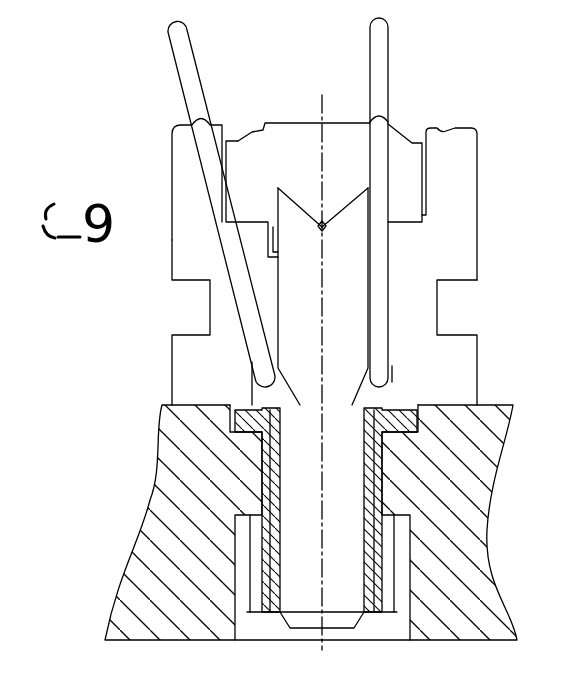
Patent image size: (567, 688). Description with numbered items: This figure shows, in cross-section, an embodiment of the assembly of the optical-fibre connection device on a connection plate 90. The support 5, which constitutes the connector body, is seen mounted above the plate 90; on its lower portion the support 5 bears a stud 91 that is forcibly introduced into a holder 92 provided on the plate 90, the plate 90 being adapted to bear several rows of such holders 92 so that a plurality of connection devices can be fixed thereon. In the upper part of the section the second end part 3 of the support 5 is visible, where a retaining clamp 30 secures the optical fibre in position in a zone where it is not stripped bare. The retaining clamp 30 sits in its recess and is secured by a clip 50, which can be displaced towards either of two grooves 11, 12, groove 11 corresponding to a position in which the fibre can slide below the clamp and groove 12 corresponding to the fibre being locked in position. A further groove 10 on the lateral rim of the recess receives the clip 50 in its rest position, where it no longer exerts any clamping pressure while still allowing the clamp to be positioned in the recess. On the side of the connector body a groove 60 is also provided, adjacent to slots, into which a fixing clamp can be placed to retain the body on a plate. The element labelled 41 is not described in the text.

The second end part 3 is at (171, 183).
The support 5 is at (172, 352).
The groove 10 is at (443, 131).
The groove 11 is at (240, 130).
The groove 12 is at (262, 128).
The retaining clamp 30 is at (300, 128).
The central column 41 is at (366, 275).
The clip 50 is at (386, 60).
The groove 60 is at (463, 322).
The plate 90 is at (488, 418).
The stud 91 is at (307, 422).
The holder 92 is at (280, 549).